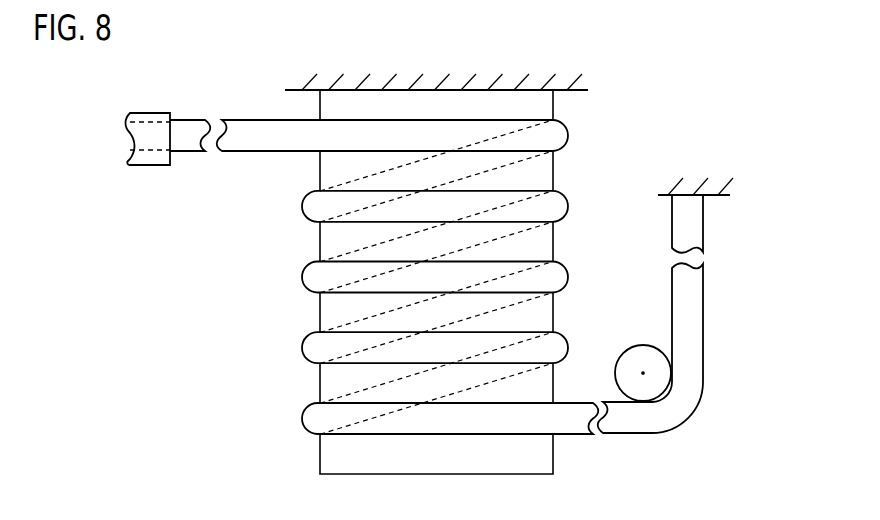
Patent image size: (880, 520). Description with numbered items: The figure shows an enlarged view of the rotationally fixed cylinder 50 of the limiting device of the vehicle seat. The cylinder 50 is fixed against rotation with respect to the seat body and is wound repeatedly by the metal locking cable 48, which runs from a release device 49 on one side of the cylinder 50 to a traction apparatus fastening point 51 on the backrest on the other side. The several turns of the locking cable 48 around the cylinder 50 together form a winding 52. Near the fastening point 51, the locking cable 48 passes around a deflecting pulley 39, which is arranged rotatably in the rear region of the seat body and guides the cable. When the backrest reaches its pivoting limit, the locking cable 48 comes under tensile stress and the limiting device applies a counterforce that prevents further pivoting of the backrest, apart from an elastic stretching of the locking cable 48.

The deflecting pulley 39 is at (647, 344).
The locking cable 48 is at (252, 152).
The release device 49 is at (145, 165).
The cylinder 50 is at (555, 380).
The traction apparatus fastening point 51 is at (670, 192).
The winding 52 is at (292, 303).